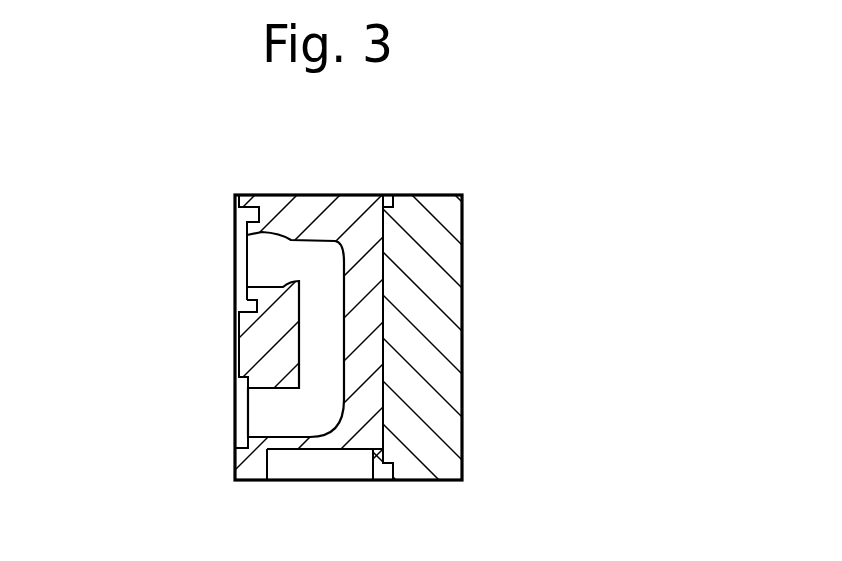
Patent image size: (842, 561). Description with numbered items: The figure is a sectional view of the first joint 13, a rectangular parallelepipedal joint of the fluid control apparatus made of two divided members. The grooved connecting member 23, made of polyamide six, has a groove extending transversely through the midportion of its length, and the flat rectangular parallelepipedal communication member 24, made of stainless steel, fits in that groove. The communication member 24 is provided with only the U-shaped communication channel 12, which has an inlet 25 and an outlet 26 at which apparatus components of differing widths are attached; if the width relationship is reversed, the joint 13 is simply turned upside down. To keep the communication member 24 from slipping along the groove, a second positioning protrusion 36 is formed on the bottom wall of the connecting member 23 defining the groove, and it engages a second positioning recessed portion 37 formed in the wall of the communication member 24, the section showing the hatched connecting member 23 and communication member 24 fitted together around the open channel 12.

The first joint 13 is at (512, 188).
The communication member 24 is at (363, 273).
The connecting member 23 is at (440, 302).
The communication channel 12 is at (323, 345).
The outlet 26 is at (255, 258).
The inlet 25 is at (255, 410).
The second positioning protrusion 36 is at (393, 460).
The second positioning recessed portion 37 is at (372, 462).